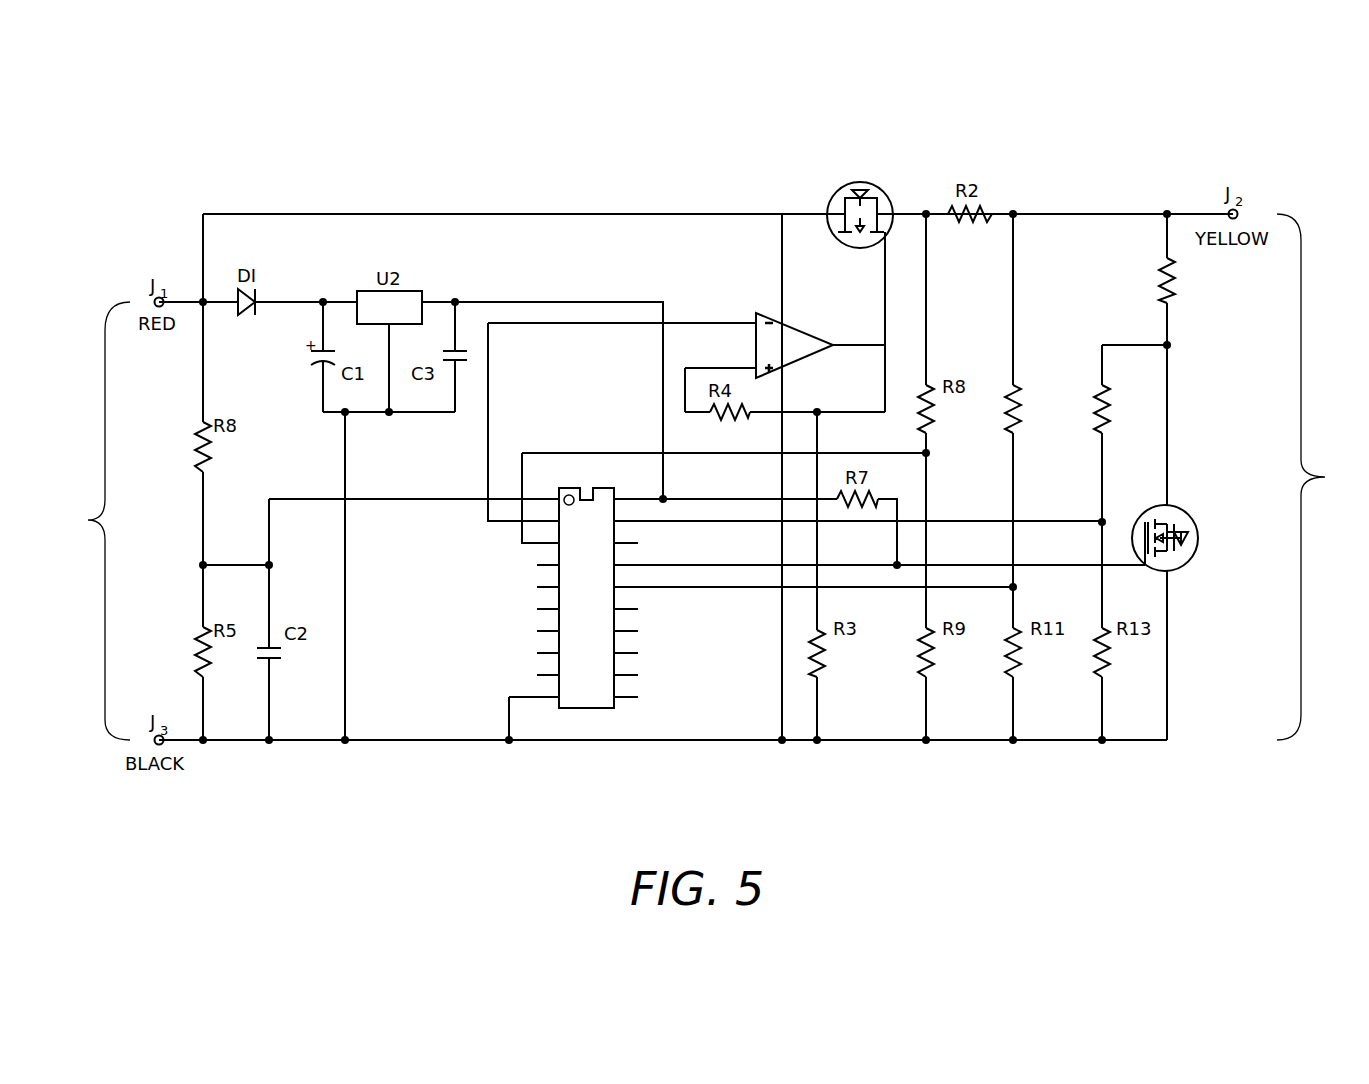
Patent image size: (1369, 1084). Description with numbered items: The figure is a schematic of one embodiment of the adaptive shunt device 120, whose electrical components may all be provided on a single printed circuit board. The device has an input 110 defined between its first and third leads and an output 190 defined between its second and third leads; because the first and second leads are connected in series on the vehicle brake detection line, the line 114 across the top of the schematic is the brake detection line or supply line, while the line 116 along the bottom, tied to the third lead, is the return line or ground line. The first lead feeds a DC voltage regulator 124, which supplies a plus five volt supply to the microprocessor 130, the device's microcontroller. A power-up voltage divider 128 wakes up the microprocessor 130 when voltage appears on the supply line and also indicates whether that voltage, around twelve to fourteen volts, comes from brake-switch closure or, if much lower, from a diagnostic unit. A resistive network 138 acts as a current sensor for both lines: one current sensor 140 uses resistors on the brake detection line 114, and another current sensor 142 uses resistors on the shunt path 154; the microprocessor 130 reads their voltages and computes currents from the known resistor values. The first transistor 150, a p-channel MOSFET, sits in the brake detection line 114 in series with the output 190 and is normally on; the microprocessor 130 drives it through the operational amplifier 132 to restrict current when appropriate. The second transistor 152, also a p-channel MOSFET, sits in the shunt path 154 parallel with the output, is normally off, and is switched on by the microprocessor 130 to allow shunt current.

The input 110 is at (79, 521).
The brake detection line 114 is at (540, 213).
The return line 116 is at (423, 742).
The adaptive shunt device 120 is at (1072, 170).
The DC voltage regulator 124 is at (365, 290).
The power-up voltage divider 128 is at (190, 579).
The microprocessor 130 is at (582, 708).
The operational amplifier 132 is at (767, 313).
The resistive network 138 is at (1063, 749).
The current sensor 140 is at (1023, 366).
The current sensor 142 is at (1083, 359).
The first transistor 150 is at (828, 200).
The second transistor 152 is at (1190, 562).
The shunt path 154 is at (1167, 403).
The output 190 is at (1323, 477).